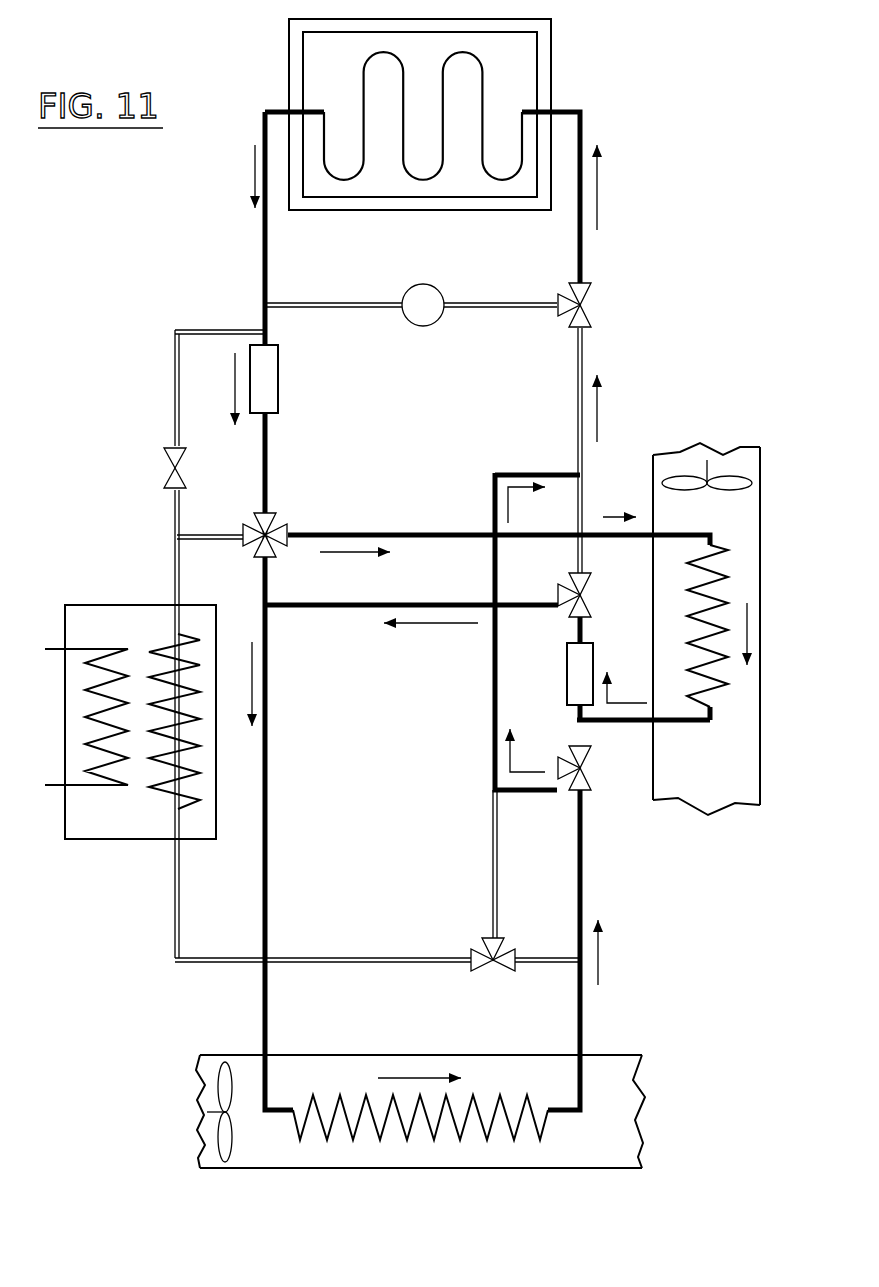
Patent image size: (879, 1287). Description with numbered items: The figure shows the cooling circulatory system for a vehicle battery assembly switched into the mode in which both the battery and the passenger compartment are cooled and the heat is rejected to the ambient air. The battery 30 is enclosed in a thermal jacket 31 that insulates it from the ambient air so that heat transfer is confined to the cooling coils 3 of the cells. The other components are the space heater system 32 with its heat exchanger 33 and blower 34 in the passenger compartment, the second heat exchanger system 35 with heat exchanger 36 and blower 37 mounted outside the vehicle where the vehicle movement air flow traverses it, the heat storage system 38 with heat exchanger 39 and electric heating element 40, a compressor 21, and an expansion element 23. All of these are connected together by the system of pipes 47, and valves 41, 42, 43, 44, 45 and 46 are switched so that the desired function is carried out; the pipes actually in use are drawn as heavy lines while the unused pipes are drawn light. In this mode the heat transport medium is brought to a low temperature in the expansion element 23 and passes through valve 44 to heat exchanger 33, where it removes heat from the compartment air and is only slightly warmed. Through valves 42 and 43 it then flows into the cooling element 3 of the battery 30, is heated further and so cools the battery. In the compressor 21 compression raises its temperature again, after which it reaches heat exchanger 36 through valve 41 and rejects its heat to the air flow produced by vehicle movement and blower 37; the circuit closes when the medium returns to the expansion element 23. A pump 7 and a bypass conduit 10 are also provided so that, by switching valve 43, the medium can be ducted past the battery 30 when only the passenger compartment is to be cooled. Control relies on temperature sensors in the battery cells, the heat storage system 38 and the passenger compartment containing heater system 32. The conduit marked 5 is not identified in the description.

The cooling coil 3 is at (347, 180).
The refrigerant conduit 5 is at (263, 236).
The pump 7 is at (443, 293).
The bypass conduit 10 is at (360, 352).
The compressor 21 is at (277, 387).
The expansion element 23 is at (592, 648).
The battery 30 is at (397, 175).
The thermal jacket 31 is at (503, 205).
The space heater system 32 is at (410, 1162).
The heat exchanger 33 is at (540, 1137).
The blower 34 is at (230, 1147).
The second heat exchanger system 35 is at (755, 792).
The heat exchanger 36 is at (712, 693).
The blower 37 is at (750, 480).
The heat storage system 38 is at (124, 828).
The heat exchanger 39 is at (185, 807).
The electric heating element 40 is at (51, 649).
The valve 41 is at (273, 518).
The valve 42 is at (588, 781).
The valve 43 is at (590, 320).
The valve 44 is at (587, 588).
The valve 45 is at (480, 954).
The valve 46 is at (167, 480).
The pipes 47 is at (265, 485).